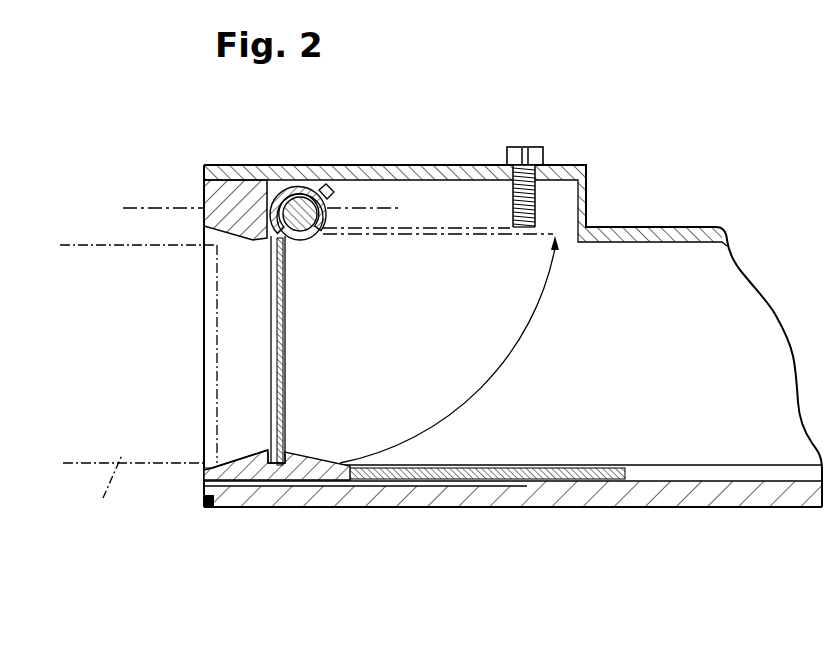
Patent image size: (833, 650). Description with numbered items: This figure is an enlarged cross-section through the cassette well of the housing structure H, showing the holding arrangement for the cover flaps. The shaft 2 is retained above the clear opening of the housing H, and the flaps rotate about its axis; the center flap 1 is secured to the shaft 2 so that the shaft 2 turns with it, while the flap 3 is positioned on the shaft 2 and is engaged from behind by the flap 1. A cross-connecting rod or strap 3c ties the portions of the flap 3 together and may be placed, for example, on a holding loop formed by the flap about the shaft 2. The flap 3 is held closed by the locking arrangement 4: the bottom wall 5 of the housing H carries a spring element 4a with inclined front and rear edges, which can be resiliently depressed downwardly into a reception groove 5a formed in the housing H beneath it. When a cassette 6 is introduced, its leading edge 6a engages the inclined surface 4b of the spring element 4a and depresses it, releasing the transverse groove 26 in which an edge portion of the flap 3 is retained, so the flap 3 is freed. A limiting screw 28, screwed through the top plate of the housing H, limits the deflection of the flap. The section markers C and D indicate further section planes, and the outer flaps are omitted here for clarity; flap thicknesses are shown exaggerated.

The center flap 1 is at (283, 339).
The shaft 2 is at (305, 238).
The flap 3 is at (271, 345).
The cross-connecting rod or strap 3c is at (323, 190).
The locking arrangement 4 is at (301, 470).
The spring element 4a is at (332, 461).
The inclined surface 4b is at (253, 456).
The bottom wall 5 is at (484, 497).
The reception groove 5a is at (204, 495).
The cassette 6 is at (133, 482).
The leading edge 6a is at (204, 382).
The transverse groove 26 is at (288, 461).
The limiting screw 28 is at (543, 153).
The housing structure H is at (687, 511).
The section line C is at (137, 208).
The section line D is at (387, 208).